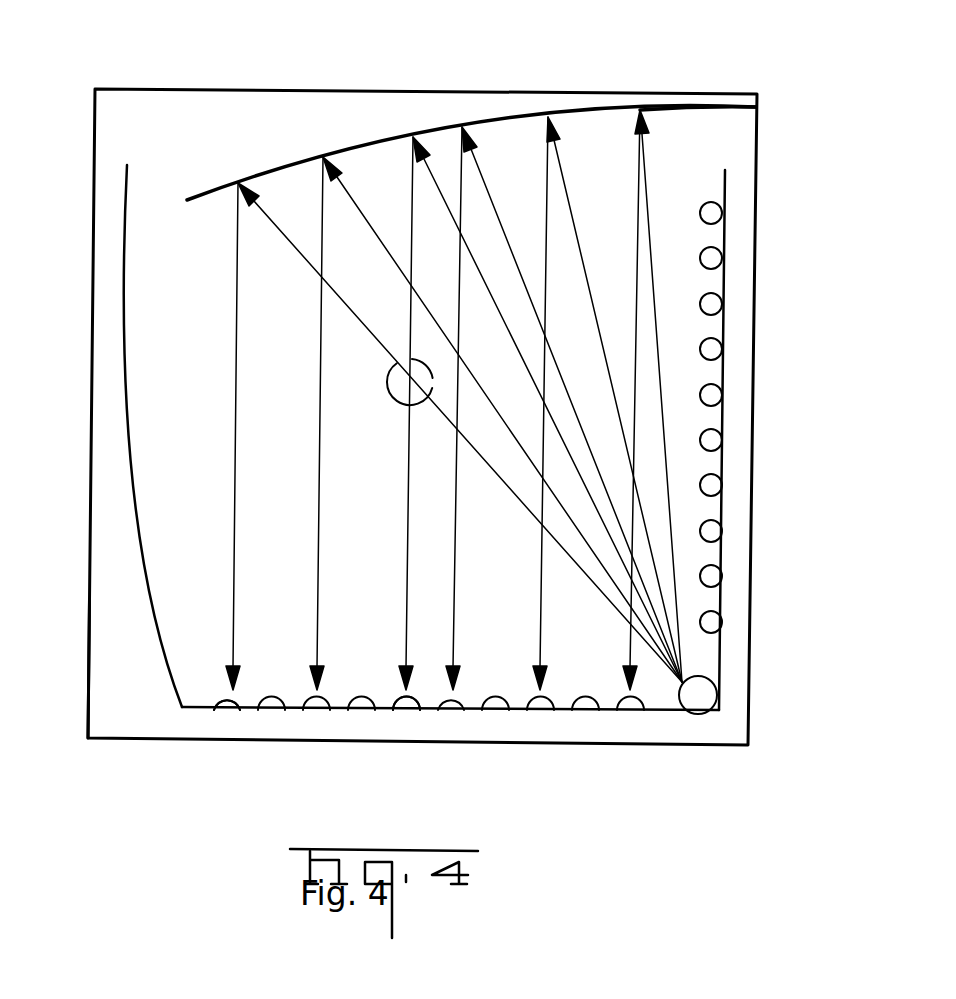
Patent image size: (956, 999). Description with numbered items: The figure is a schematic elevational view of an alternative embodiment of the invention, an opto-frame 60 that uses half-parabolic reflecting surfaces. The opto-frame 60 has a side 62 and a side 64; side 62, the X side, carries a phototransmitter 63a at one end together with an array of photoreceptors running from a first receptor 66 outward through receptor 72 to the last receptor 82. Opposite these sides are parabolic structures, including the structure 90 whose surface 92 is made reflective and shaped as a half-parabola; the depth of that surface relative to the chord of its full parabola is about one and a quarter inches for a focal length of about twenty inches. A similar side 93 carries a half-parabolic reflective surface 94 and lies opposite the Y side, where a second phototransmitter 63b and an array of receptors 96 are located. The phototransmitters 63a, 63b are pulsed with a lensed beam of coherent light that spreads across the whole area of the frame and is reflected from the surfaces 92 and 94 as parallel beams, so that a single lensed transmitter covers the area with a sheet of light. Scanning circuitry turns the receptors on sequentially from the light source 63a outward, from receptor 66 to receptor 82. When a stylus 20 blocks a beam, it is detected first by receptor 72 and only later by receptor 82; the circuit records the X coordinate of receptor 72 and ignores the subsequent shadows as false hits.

The stylus 20 is at (403, 409).
The opto-frame 60 is at (768, 401).
The side 62 is at (653, 711).
The phototransmitter 63a is at (702, 694).
The phototransmitter 63b is at (711, 203).
The side 64 is at (720, 508).
The photoreceptor 66 is at (632, 704).
The photoreceptor 72 is at (405, 705).
The photoreceptor 82 is at (230, 703).
The parabolic structure 90 is at (598, 107).
The reflective surface 92 is at (572, 121).
The side 93 is at (78, 692).
The half parabolic reflective surface 94 is at (128, 372).
The photoreceptors 96 is at (722, 266).